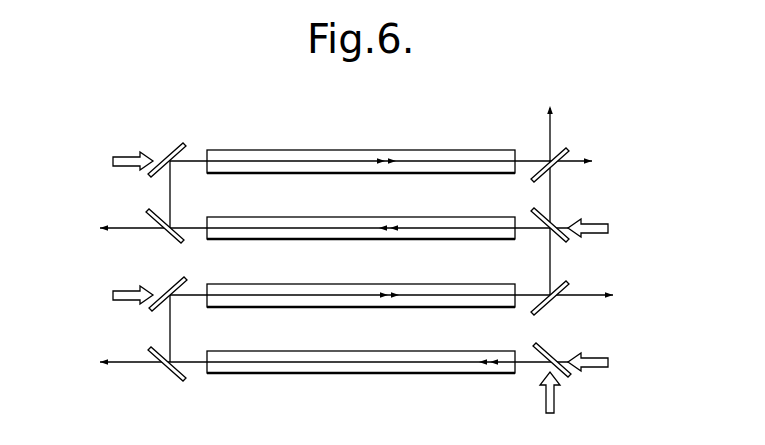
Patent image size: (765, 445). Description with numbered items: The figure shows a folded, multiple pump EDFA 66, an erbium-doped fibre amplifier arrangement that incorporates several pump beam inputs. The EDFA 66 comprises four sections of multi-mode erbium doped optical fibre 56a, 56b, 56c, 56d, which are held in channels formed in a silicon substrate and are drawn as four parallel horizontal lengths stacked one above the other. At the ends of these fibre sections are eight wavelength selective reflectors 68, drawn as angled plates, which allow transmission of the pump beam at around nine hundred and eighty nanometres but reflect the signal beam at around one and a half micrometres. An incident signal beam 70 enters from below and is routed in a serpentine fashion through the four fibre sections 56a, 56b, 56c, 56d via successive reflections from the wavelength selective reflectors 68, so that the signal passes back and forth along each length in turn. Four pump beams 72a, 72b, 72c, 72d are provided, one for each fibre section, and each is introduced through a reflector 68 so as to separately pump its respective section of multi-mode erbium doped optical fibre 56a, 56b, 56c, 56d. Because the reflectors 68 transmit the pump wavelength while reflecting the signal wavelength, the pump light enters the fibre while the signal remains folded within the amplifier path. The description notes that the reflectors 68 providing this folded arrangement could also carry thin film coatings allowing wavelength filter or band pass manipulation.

The multiple pump EDFA 66 is at (650, 155).
The section of multi-mode erbium doped optical fibre 56a is at (327, 157).
The section of multi-mode erbium doped optical fibre 56b is at (350, 225).
The section of multi-mode erbium doped optical fibre 56c is at (324, 291).
The section of multi-mode erbium doped optical fibre 56d is at (350, 358).
The wavelength selective reflector 68 is at (172, 152).
The pump beam 72a is at (118, 167).
The pump beam 72b is at (601, 220).
The pump beam 72c is at (118, 301).
The pump beam 72d is at (592, 374).
The incident signal beam 70 is at (545, 400).